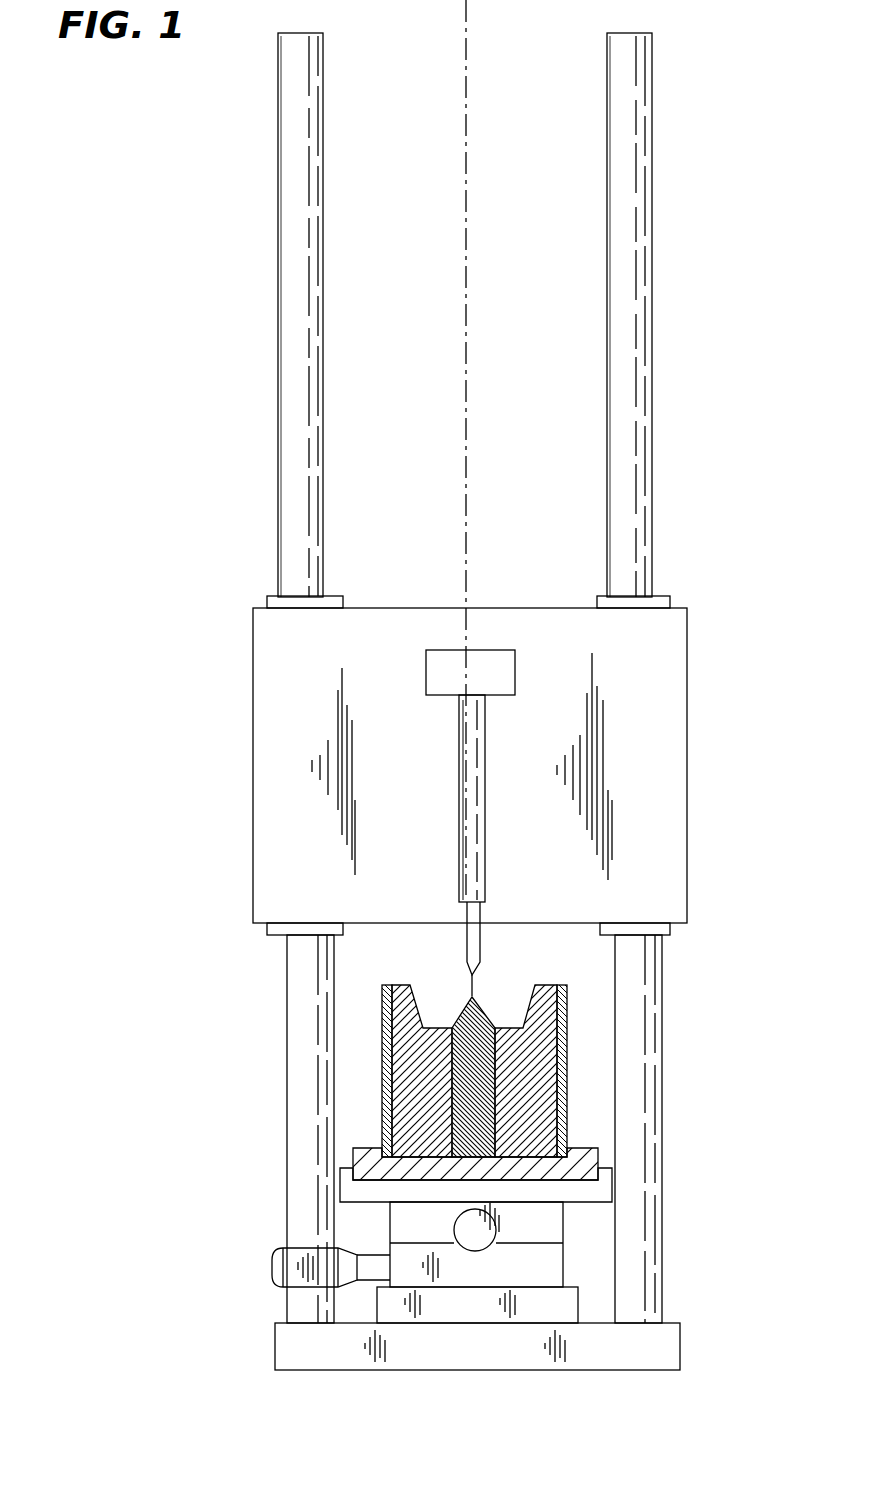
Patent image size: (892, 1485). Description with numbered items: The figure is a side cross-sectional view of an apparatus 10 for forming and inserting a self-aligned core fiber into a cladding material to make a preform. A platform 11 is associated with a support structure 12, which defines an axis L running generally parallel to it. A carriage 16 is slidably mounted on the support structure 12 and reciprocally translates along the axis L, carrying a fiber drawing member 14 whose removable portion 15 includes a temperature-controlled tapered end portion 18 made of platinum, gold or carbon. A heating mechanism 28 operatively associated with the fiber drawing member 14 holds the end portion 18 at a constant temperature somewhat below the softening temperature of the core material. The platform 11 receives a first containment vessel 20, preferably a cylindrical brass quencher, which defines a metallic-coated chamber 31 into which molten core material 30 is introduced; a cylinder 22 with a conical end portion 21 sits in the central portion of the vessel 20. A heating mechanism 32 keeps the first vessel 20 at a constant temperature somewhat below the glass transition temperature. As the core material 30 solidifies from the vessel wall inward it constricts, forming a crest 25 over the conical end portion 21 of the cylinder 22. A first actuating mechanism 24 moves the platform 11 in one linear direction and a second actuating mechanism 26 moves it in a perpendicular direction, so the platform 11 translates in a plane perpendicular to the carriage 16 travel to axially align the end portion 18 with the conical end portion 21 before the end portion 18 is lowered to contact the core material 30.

The apparatus 10 is at (732, 80).
The platform 11 is at (586, 1170).
The support structure 12 is at (300, 298).
The fiber drawing member 14 is at (487, 810).
The removable portion 15 is at (482, 913).
The carriage 16 is at (668, 860).
The end portion 18 is at (469, 972).
The first containment vessel 20 is at (473, 1095).
The conical end portion 21 is at (472, 997).
The cylinder 22 is at (467, 1150).
The first actuating mechanism 24 is at (492, 1246).
The crest 25 is at (474, 997).
The second actuating mechanism 26 is at (272, 1267).
The heating mechanism 28 is at (460, 813).
The molten core material 30 is at (512, 1007).
The chamber 31 is at (433, 1012).
The heating mechanism 32 is at (568, 1128).
The axis L is at (462, 128).